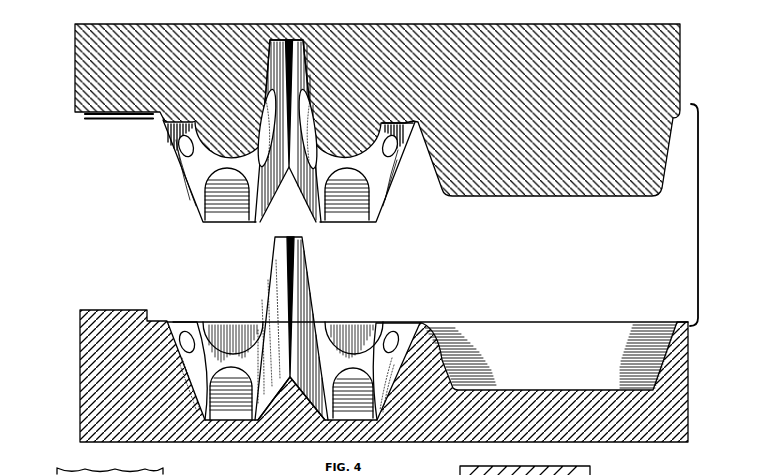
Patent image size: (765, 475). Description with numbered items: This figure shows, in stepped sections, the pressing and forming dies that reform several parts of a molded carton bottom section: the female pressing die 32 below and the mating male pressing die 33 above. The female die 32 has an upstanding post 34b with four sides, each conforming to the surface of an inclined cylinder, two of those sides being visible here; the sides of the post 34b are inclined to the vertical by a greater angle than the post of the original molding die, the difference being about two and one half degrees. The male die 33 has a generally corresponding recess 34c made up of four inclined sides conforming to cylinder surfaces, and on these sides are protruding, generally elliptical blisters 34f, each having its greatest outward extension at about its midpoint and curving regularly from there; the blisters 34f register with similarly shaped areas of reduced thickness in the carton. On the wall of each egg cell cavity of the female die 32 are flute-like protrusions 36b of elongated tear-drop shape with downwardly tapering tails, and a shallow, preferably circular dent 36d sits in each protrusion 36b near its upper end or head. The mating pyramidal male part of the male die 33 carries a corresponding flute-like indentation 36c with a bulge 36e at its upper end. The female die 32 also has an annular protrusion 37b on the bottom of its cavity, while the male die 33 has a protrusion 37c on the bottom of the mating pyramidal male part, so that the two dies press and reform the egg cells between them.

The female pressing and forming die 32 is at (78, 317).
The male pressing and forming die 33 is at (74, 44).
The upstanding post 34b is at (309, 274).
The recess 34c is at (292, 40).
The elliptical blisters 34f is at (266, 117).
The flute-like protrusions 36b is at (201, 347).
The flute-like indentation 36c is at (192, 188).
The shallow dent 36d is at (186, 334).
The bulge 36e is at (178, 148).
The annular protrusion 37b is at (221, 368).
The protrusion 37c is at (227, 226).